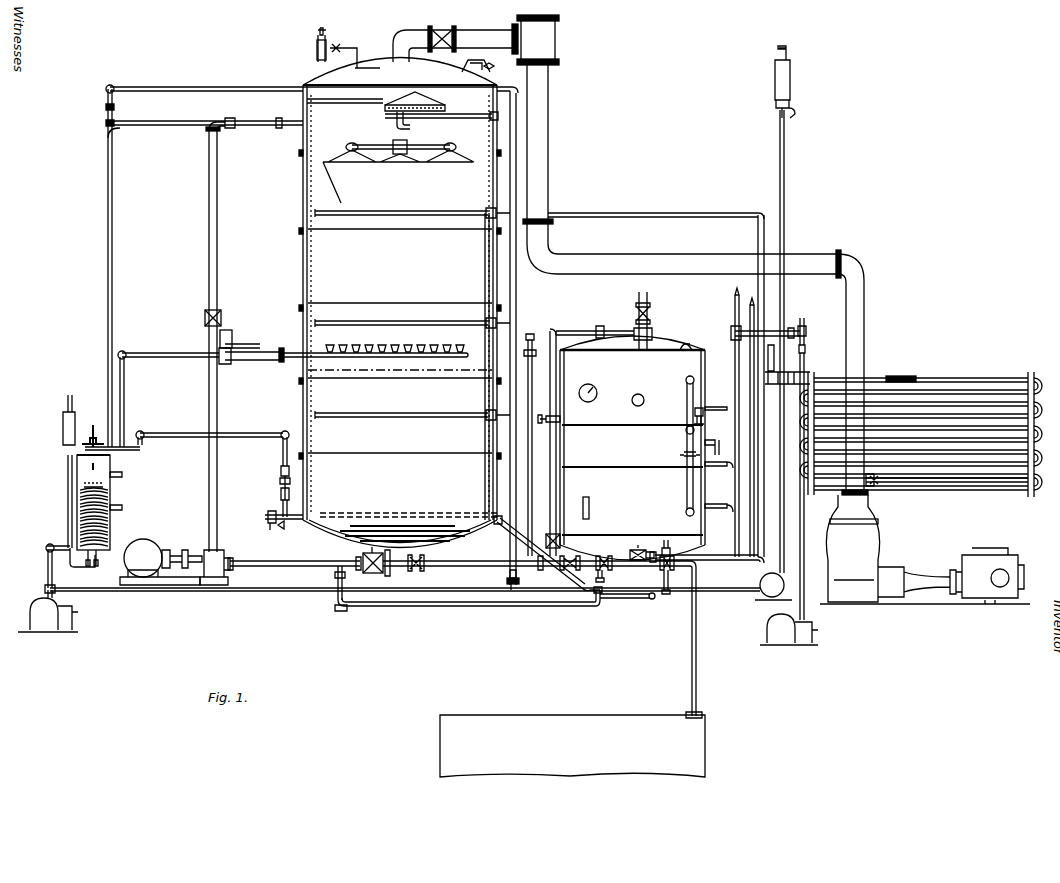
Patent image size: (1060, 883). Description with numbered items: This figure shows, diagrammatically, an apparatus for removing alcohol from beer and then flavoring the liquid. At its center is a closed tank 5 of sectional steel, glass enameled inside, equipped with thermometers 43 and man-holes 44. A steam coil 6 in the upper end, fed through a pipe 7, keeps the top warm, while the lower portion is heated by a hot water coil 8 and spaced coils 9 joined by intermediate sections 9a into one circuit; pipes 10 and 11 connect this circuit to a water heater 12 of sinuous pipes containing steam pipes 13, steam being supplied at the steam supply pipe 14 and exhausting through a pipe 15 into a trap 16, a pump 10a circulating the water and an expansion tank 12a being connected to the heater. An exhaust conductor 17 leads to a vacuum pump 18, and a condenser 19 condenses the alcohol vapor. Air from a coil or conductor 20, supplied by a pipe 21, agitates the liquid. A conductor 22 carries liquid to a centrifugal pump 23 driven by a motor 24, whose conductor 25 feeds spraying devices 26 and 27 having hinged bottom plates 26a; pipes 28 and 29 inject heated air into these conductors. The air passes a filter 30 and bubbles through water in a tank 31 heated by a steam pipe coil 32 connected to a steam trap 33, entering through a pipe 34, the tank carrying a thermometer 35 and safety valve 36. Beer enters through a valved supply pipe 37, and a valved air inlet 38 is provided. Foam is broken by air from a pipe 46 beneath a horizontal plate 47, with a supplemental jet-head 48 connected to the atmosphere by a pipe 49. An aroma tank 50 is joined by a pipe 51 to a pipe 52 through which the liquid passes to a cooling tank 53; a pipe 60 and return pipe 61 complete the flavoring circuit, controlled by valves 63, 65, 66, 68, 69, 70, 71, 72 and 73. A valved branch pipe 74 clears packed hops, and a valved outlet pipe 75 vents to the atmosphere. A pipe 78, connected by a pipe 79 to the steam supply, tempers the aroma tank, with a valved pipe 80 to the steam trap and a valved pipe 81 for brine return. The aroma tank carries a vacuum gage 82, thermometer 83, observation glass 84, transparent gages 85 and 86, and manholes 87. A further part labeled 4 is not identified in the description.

The lower tray pipe 4 is at (420, 418).
The closed tank 5 is at (303, 268).
The steam coil 6 is at (384, 59).
The pipe 7 is at (517, 312).
The coil 8 is at (428, 530).
The coils 9 is at (430, 213).
The intermediate sections 9a is at (485, 258).
The pipe 10 is at (716, 593).
The pump 10a is at (776, 578).
The pipe 11 is at (608, 218).
The water heater 12 is at (932, 380).
The expansion tank 12a is at (795, 92).
The steam pipes 13 is at (902, 376).
The steam supply pipe 14 is at (806, 325).
The pipe 15 is at (383, 107).
The trap 16 is at (766, 630).
The exhaust conductor 17 is at (592, 257).
The vacuum pump 18 is at (866, 548).
The condenser 19 is at (548, 170).
The coil or conductor 20 is at (390, 513).
The pipe 21 is at (247, 438).
The conductor 22 is at (270, 567).
The centrifugal pump 23 is at (224, 555).
The motor 24 is at (150, 548).
The conductor 25 is at (208, 486).
The spraying device 26 is at (416, 162).
The bottom plates 26a is at (341, 199).
The spraying device 27 is at (376, 352).
The pipe 28 is at (113, 166).
The pipe 29 is at (163, 353).
The filter 30 is at (63, 428).
The tank 31 is at (84, 475).
The steam pipe coil 32 is at (110, 515).
The steam trap 33 is at (36, 618).
The pipe 34 is at (384, 372).
The thermometer 35 is at (92, 432).
The safety valve 36 is at (68, 455).
The valved supply pipe 37 is at (274, 525).
The valved air inlet 38 is at (280, 490).
The thermometers 43 is at (315, 46).
The man-holes 44 is at (490, 70).
The pipe 46 is at (270, 87).
The horizontal plate 47 is at (420, 100).
The supplemental jet-head 48 is at (410, 126).
The pipe 49 is at (480, 119).
The aroma tank 50 is at (632, 448).
The pipe 51 is at (550, 472).
The pipe 52 is at (486, 566).
The cooling tank 53 is at (600, 722).
The pipe 60 is at (508, 607).
The return pipe 61 is at (205, 315).
The valve 63 is at (376, 573).
The valve 65 is at (230, 360).
The valve 66 is at (558, 572).
The valve 68 is at (230, 334).
The valve 69 is at (546, 538).
The valve 70 is at (632, 552).
The valve 71 is at (612, 570).
The valve 72 is at (580, 332).
The valve 73 is at (666, 594).
The valved branch pipe 74 is at (538, 420).
The valved outlet pipe 75 is at (650, 308).
The pipe 78 is at (733, 470).
The pipe 79 is at (790, 322).
The valved pipe 80 is at (640, 599).
The valved pipe 81 is at (740, 562).
The vacuum gage 82 is at (596, 396).
The thermometer 83 is at (590, 512).
The observation glass 84 is at (644, 402).
The transparent gage 85 is at (686, 384).
The transparent gage 86 is at (684, 456).
The manholes 87 is at (683, 350).